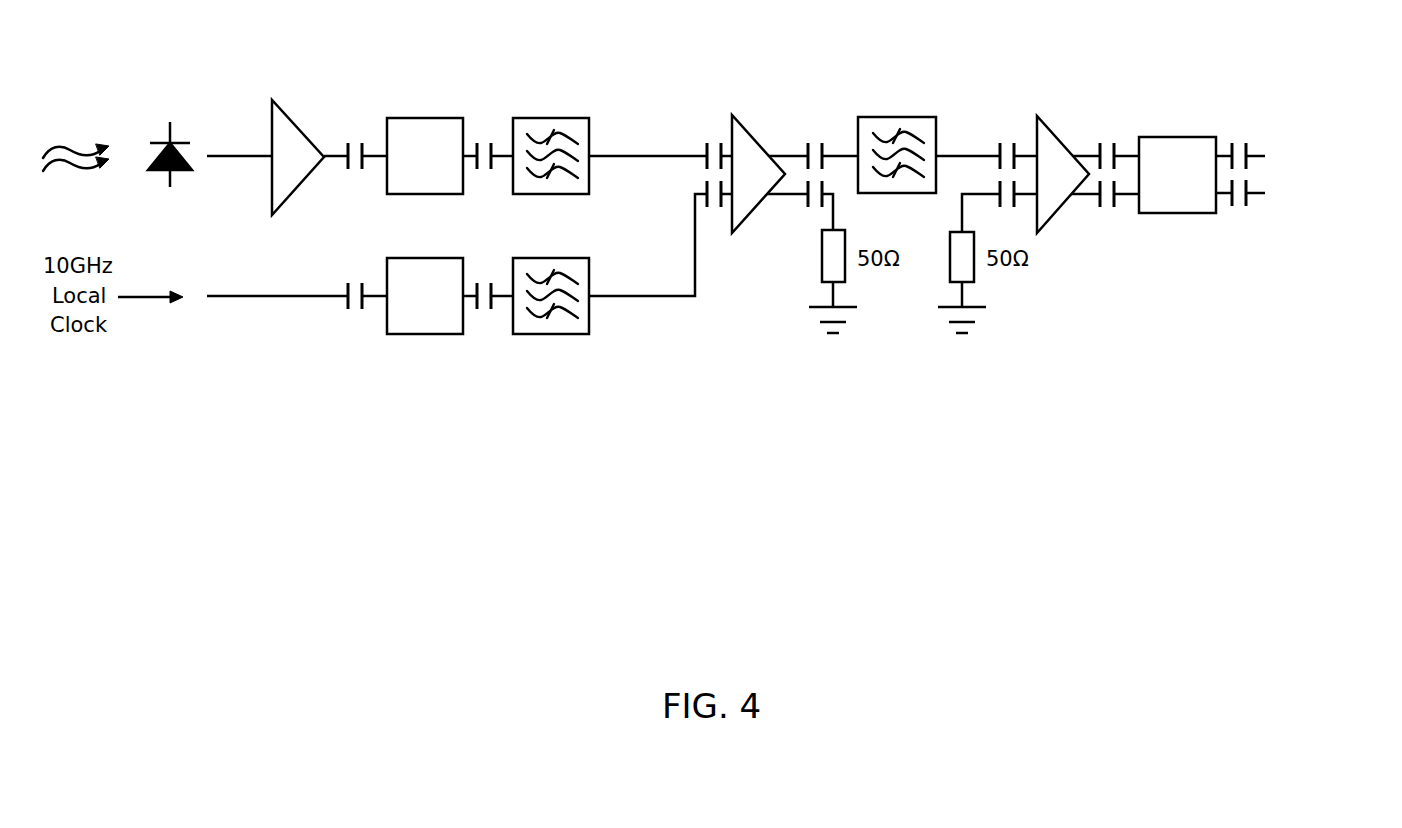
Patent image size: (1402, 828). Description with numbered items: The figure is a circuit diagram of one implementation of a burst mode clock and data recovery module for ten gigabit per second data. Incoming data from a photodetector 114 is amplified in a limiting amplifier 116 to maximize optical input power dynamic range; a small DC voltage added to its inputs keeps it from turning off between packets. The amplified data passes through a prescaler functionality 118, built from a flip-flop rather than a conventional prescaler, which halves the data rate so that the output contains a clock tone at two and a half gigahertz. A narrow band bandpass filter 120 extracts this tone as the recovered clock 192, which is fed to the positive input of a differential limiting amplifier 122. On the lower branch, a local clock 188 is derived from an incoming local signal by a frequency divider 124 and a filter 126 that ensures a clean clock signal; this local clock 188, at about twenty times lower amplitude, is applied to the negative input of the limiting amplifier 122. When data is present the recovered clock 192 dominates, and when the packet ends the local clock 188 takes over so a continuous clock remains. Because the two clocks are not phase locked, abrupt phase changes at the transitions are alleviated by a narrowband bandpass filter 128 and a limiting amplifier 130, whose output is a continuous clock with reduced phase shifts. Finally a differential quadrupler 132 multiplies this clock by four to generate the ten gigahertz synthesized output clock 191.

The photodetector 114 is at (170, 120).
The limiting amplifier 116 is at (298, 134).
The prescaler functionality 118 is at (425, 123).
The narrow band bandpass filter 120 is at (551, 123).
The limiting amplifier 122 is at (758, 143).
The frequency divider 124 is at (425, 315).
The filter 126 is at (551, 328).
The narrowband bandpass filter 128 is at (897, 123).
The limiting amplifier 130 is at (1063, 143).
The differential quadrupler 132 is at (1177, 135).
The local clock 188 is at (648, 245).
The output clock 191 is at (1295, 174).
The recovered clock 192 is at (648, 142).